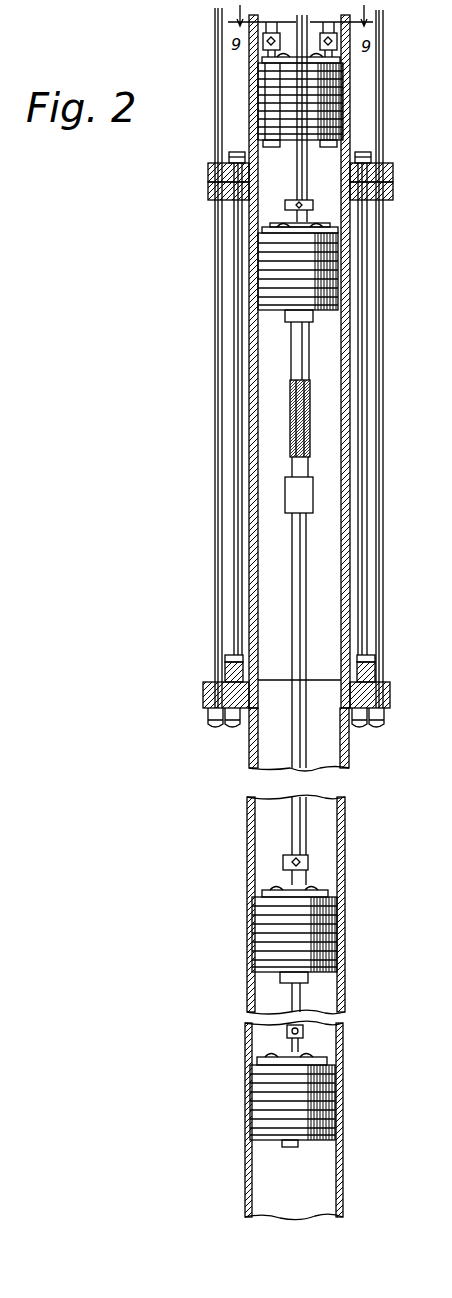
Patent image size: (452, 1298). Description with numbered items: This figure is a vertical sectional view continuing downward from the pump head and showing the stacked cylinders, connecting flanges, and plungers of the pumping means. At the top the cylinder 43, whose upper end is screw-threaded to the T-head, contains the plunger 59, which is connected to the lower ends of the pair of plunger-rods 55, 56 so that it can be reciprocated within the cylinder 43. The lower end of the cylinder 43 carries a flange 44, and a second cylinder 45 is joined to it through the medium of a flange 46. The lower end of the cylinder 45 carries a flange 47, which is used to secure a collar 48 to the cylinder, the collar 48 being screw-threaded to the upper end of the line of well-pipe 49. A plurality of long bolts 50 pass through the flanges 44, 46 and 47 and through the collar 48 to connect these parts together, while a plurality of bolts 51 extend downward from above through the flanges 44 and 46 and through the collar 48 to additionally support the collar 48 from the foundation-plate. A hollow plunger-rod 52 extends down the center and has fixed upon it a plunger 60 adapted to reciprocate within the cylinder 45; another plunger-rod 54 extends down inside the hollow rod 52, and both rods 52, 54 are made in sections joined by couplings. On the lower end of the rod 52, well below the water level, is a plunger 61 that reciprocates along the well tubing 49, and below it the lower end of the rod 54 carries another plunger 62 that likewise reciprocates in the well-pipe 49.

The cylinder 43 is at (348, 97).
The flange 44 is at (392, 167).
The second cylinder 45 is at (350, 343).
The flange 46 is at (393, 192).
The flange 47 is at (240, 669).
The collar 48 is at (203, 693).
The well-pipe 49 is at (350, 745).
The long bolts 50 is at (238, 414).
The bolts 51 is at (217, 322).
The hollow plunger-rod 52 is at (293, 52).
The plunger-rod 54 is at (296, 397).
The plunger-rod 55 is at (264, 56).
The plunger-rod 56 is at (347, 60).
The plunger 59 is at (347, 120).
The plunger 60 is at (288, 246).
The plunger 61 is at (272, 905).
The plunger 62 is at (272, 1077).